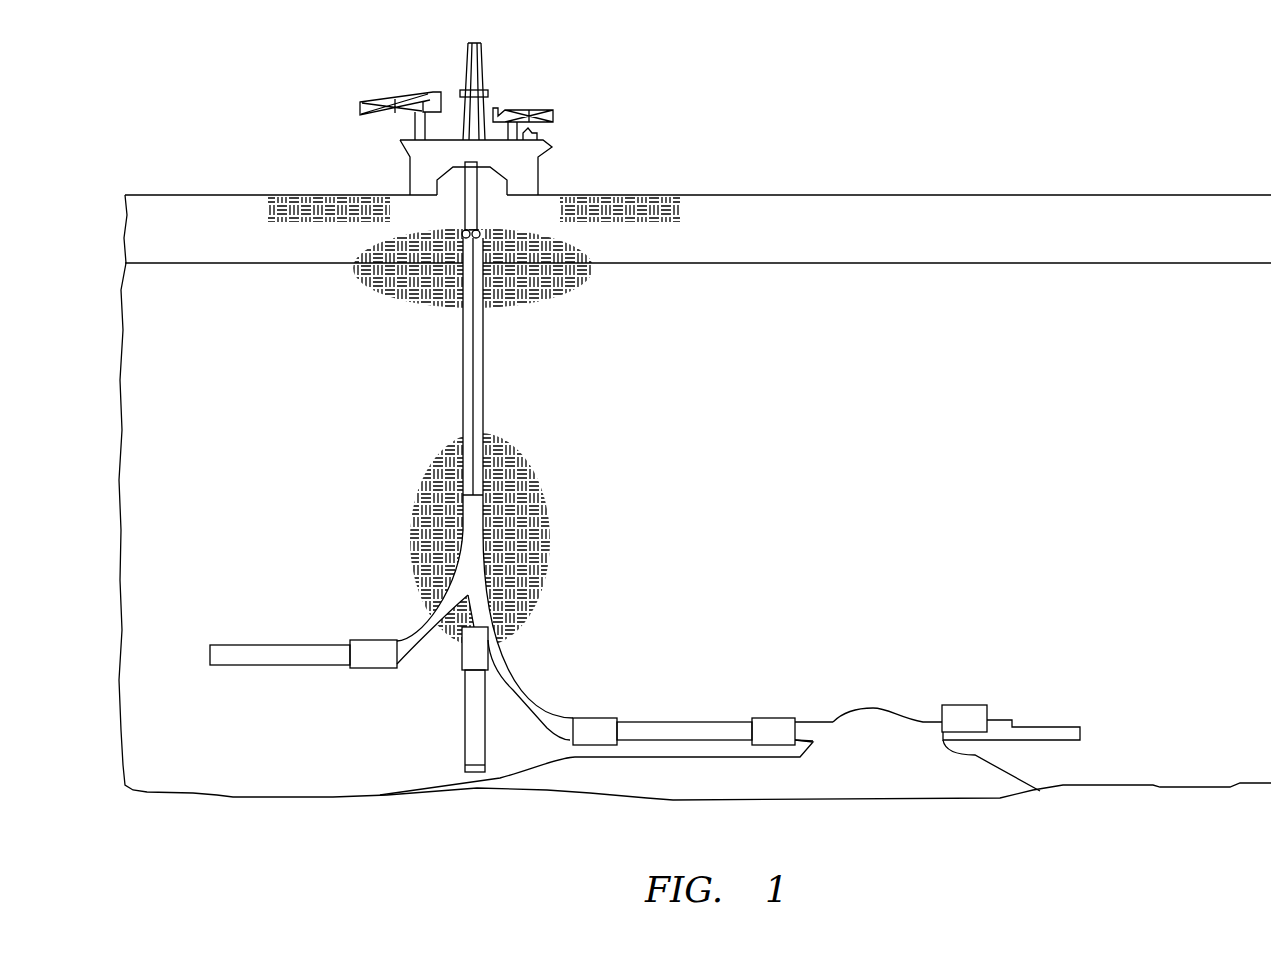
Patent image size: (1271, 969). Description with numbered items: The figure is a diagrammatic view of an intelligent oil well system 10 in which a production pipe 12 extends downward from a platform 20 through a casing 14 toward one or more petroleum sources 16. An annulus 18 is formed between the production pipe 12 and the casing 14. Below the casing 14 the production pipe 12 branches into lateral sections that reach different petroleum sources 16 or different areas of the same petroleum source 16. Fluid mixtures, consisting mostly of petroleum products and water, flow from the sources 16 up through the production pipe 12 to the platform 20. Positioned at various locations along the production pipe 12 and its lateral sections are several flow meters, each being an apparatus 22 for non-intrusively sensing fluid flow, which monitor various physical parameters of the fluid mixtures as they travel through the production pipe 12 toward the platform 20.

The intelligent oil well system 10 is at (523, 210).
The production pipe 12 is at (473, 392).
The casing 14 is at (463, 334).
The petroleum source 16 is at (883, 786).
The annulus 18 is at (477, 333).
The platform 20 is at (400, 143).
The apparatus for non-intrusively sensing fluid flow 22 is at (368, 645).